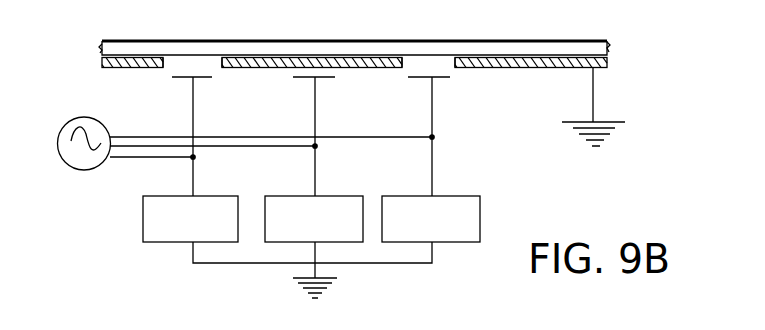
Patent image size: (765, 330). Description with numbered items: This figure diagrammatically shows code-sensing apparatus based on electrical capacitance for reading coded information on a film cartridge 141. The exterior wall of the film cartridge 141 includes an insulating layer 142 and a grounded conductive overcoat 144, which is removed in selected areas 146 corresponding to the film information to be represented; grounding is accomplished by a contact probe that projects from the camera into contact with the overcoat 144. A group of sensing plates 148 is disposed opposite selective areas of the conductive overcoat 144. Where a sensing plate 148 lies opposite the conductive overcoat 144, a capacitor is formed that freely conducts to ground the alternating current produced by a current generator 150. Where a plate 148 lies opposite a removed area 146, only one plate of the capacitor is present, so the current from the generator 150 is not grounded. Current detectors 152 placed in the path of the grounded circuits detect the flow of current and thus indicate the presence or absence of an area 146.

The film cartridge 141 is at (497, 43).
The insulating layer 142 is at (590, 50).
The conductive overcoat 144 is at (517, 68).
The selected areas 146 is at (191, 59).
The sensing plates 148 is at (212, 78).
The current generator 150 is at (90, 117).
The current detectors 152 is at (347, 196).